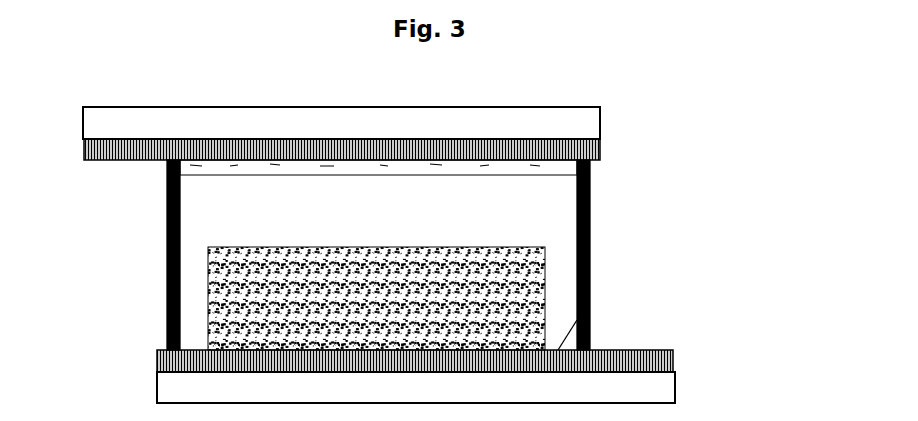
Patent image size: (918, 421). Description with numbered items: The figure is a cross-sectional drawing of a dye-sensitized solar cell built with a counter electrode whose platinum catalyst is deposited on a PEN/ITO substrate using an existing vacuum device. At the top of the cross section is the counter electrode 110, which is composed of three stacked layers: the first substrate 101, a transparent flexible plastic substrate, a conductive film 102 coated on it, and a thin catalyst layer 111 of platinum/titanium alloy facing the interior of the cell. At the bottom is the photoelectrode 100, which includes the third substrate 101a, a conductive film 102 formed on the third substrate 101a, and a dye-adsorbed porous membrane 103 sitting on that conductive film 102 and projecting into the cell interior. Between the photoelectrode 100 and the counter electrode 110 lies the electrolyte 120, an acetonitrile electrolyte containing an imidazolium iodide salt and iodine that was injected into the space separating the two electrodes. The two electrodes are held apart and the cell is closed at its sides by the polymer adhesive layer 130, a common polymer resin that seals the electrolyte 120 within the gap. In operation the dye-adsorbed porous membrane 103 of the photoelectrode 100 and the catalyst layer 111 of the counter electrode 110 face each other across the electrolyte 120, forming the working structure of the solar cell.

The photoelectrode 100 is at (486, 319).
The first substrate 101 is at (598, 108).
The third substrate 101a is at (612, 387).
The conductive film 102 is at (600, 140).
The dye-adsorbed porous membrane 103 is at (545, 257).
The counter electrode 110 is at (449, 128).
The catalyst layer 111 is at (588, 171).
The electrolyte 120 is at (543, 205).
The polymer adhesive layer 130 is at (167, 253).